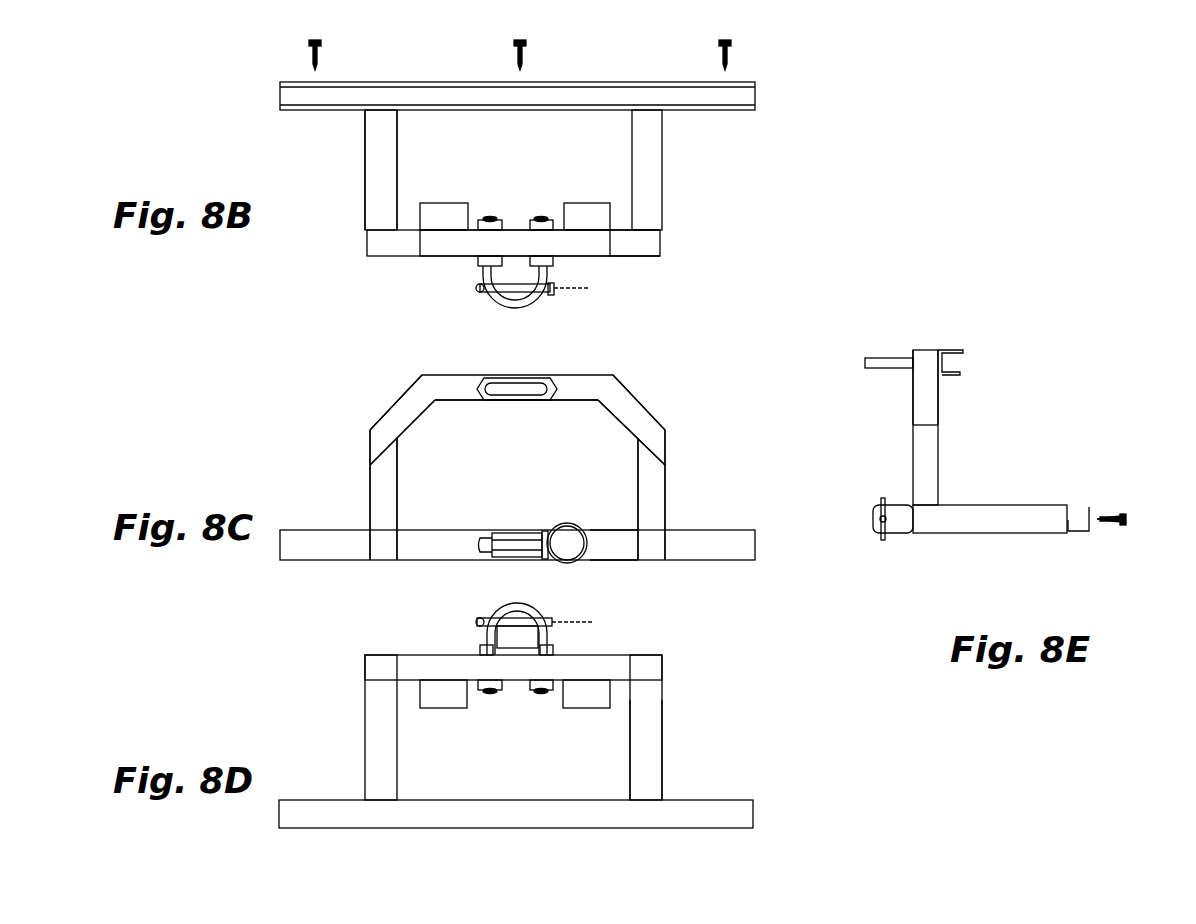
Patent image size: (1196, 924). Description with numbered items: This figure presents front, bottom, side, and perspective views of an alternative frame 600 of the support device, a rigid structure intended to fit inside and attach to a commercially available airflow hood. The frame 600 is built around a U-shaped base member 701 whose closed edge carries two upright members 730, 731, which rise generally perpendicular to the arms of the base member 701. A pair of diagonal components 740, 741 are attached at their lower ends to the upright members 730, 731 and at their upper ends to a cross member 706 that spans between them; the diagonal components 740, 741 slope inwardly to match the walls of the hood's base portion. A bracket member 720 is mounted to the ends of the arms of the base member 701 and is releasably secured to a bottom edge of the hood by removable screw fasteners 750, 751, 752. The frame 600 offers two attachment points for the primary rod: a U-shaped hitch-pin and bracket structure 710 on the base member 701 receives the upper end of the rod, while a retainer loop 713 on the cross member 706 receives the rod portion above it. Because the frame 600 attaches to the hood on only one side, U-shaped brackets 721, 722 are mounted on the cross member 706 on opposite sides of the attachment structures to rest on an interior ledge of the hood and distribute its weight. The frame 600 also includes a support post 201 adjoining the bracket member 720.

In FIG. 8B, the support post 201 is at (375, 138).
In FIG. 8B, the frame 600 is at (672, 188).
In FIG. 8C, the frame 600 is at (675, 465).
In FIG. 8D, the frame 600 is at (688, 718).
In FIG. 8E, the frame 600 is at (955, 415).
In FIG. 8C, the U-shaped base member 701 is at (605, 548).
In FIG. 8D, the U-shaped base member 701 is at (645, 786).
In FIG. 8E, the U-shaped base member 701 is at (975, 528).
In FIG. 8B, the cross member 706 is at (440, 248).
In FIG. 8C, the cross member 706 is at (572, 395).
In FIG. 8C, the U-shaped hitch-pin and bracket structure 710 is at (520, 532).
In FIG. 8D, the U-shaped hitch-pin and bracket structure 710 is at (548, 636).
In FIG. 8E, the U-shaped hitch-pin and bracket structure 710 is at (903, 518).
In FIG. 8B, the retainer loop 713 is at (500, 295).
In FIG. 8C, the retainer loop 713 is at (508, 400).
In FIG. 8D, the retainer loop 713 is at (515, 610).
In FIG. 8E, the retainer loop 713 is at (870, 353).
In FIG. 8B, the bracket member 720 is at (742, 104).
In FIG. 8C, the bracket member 720 is at (705, 552).
In FIG. 8D, the bracket member 720 is at (745, 819).
In FIG. 8E, the bracket member 720 is at (1075, 505).
In FIG. 8B, the U-shaped bracket 721 is at (440, 205).
In FIG. 8D, the U-shaped bracket 721 is at (440, 708).
In FIG. 8B, the U-shaped bracket 722 is at (574, 205).
In FIG. 8D, the U-shaped bracket 722 is at (580, 708).
In FIG. 8E, the U-shaped bracket 722 is at (963, 350).
In FIG. 8C, the upright member 730 is at (385, 487).
In FIG. 8C, the upright member 731 is at (660, 513).
In FIG. 8B, the diagonal component 740 is at (368, 247).
In FIG. 8C, the diagonal component 740 is at (408, 407).
In FIG. 8B, the diagonal component 741 is at (655, 244).
In FIG. 8C, the diagonal component 741 is at (620, 397).
In FIG. 8E, the diagonal component 741 is at (925, 415).
In FIG. 8B, the first screw 750 is at (306, 56).
In FIG. 8B, the second screw 751 is at (512, 58).
In FIG. 8B, the third screw 752 is at (715, 60).
In FIG. 8E, the third screw 752 is at (1105, 530).